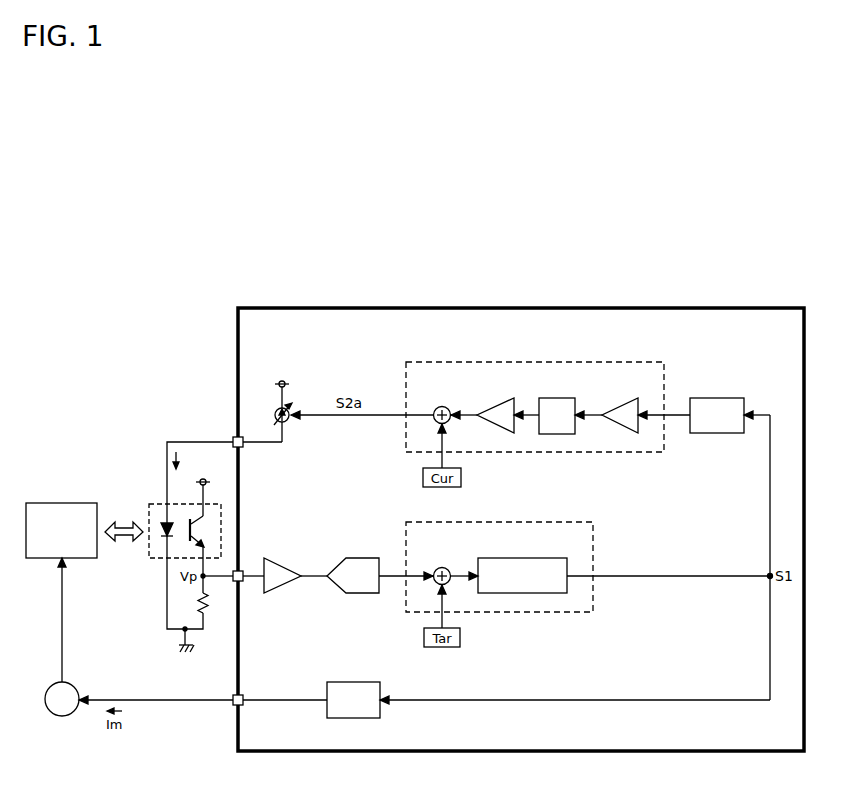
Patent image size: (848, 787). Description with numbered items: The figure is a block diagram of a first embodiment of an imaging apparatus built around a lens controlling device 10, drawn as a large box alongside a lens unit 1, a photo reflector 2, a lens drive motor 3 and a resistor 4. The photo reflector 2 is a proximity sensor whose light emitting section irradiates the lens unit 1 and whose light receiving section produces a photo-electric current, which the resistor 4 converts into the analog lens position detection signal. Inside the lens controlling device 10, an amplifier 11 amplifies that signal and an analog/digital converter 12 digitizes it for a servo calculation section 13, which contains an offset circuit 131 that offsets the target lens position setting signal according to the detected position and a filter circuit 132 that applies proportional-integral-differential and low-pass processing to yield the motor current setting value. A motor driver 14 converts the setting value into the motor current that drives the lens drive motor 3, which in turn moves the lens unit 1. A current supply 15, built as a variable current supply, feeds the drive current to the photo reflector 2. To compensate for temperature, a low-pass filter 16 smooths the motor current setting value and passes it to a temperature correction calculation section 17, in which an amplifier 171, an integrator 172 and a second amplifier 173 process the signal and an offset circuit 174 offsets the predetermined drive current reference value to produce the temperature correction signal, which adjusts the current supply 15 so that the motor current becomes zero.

The lens unit 1 is at (63, 503).
The photo reflector 2 is at (164, 504).
The lens drive motor 3 is at (73, 688).
The resistor 4 is at (208, 601).
The lens controlling device 10 is at (519, 306).
The amplifier 11 is at (284, 564).
The analog/digital converter 12 is at (351, 558).
The servo calculation section 13 is at (500, 522).
The motor driver 14 is at (356, 682).
The current supply 15 is at (275, 416).
The low-pass filter 16 is at (717, 398).
The temperature correction calculation section 17 is at (541, 362).
The offset circuit 131 is at (442, 565).
The filter circuit 132 is at (522, 558).
The amplifier 171 is at (616, 405).
The integrator 172 is at (557, 398).
The amplifier 173 is at (494, 405).
The offset circuit 174 is at (442, 406).